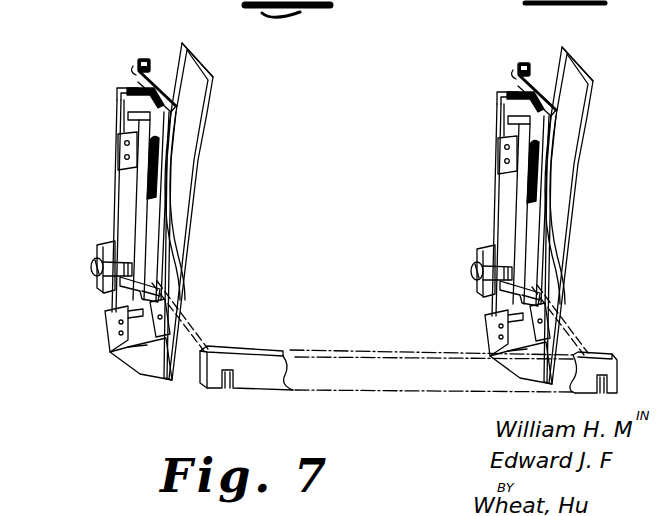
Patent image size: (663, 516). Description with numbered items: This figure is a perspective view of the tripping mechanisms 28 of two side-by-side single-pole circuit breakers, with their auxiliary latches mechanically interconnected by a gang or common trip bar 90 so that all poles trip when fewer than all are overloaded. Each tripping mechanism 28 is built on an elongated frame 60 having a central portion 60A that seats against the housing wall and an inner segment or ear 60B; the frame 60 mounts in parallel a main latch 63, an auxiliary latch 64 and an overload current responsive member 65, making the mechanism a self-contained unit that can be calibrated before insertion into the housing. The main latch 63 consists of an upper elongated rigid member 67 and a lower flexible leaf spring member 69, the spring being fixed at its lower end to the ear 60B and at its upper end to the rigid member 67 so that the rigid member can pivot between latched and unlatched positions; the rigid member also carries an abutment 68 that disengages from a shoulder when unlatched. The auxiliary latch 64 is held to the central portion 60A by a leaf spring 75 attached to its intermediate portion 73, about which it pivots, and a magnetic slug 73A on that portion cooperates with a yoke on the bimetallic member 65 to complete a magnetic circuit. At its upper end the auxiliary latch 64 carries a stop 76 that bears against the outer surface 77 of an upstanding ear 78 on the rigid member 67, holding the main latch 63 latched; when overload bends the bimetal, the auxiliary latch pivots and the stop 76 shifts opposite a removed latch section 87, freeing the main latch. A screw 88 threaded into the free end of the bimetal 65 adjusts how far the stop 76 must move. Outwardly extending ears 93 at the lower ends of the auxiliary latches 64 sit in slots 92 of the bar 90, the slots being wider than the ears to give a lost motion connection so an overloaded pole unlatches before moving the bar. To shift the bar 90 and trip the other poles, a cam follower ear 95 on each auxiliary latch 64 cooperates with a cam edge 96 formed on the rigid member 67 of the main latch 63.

The tripping mechanism 28 is at (240, 101).
The elongated frame 60 is at (213, 77).
The central portion 60A is at (190, 166).
The inner segment or ear 60B is at (117, 352).
The main latch 63 is at (118, 104).
The auxiliary latch 64 is at (160, 97).
The overload current responsive member 65 is at (100, 287).
The upper elongated rigid member 67 is at (117, 91).
The abutment 68 is at (112, 168).
The lower flexible leaf spring member 69 is at (118, 215).
The intermediate portion 73 is at (170, 213).
The magnetic slug 73A is at (158, 180).
The leaf spring 75 is at (158, 233).
The stop 76 is at (135, 75).
The outer surface 77 is at (133, 71).
The upstanding ear 78 is at (144, 59).
The removed latch section 87 is at (126, 80).
The screw 88 is at (91, 263).
The gang or common trip bar 90 is at (370, 392).
The slots 92 is at (226, 388).
The outwardly extending ears 93 is at (148, 283).
The cam follower ear 95 is at (118, 125).
The cam edge 96 is at (118, 115).